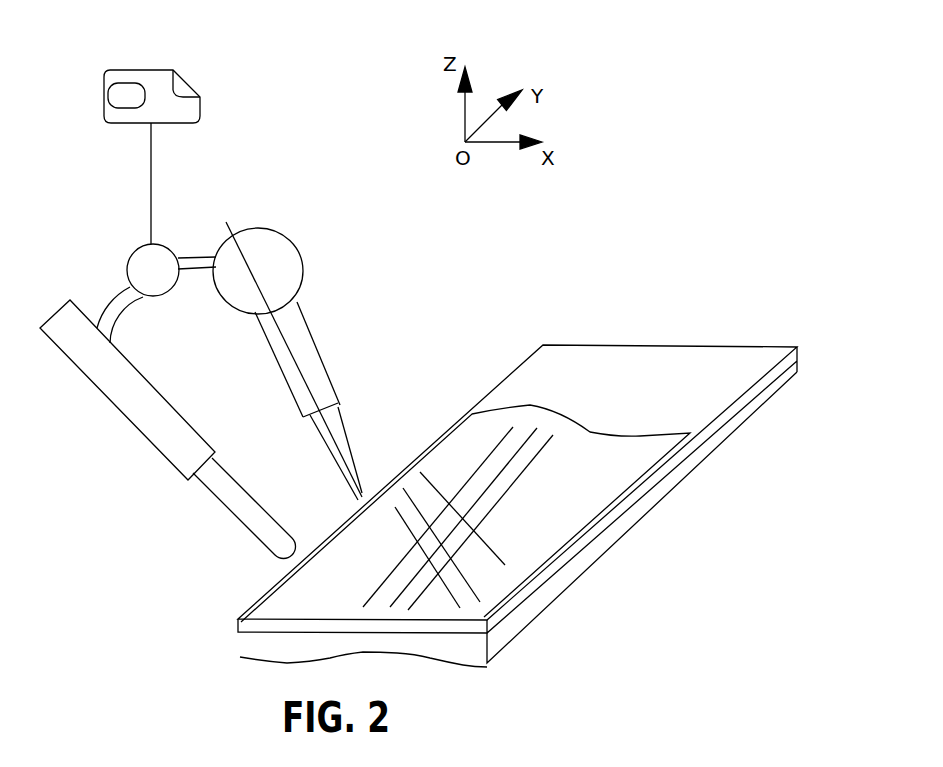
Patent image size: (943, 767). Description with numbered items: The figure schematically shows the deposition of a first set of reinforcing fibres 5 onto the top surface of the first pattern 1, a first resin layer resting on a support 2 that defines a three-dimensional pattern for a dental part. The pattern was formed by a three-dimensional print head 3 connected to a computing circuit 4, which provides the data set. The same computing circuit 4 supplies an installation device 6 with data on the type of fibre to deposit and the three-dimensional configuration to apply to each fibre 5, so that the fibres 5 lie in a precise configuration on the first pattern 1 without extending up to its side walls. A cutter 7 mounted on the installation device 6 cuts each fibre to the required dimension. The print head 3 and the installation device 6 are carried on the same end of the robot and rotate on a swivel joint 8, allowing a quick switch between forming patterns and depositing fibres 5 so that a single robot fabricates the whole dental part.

The first resin layer 1 is at (510, 603).
The support 2 is at (607, 540).
The 3D print head 3 is at (153, 430).
The computing circuit 4 is at (185, 78).
The reinforcing fibres 5 is at (360, 500).
The installation device 6 is at (310, 332).
The cutter 7 is at (330, 468).
The swivel joint 8 is at (142, 268).